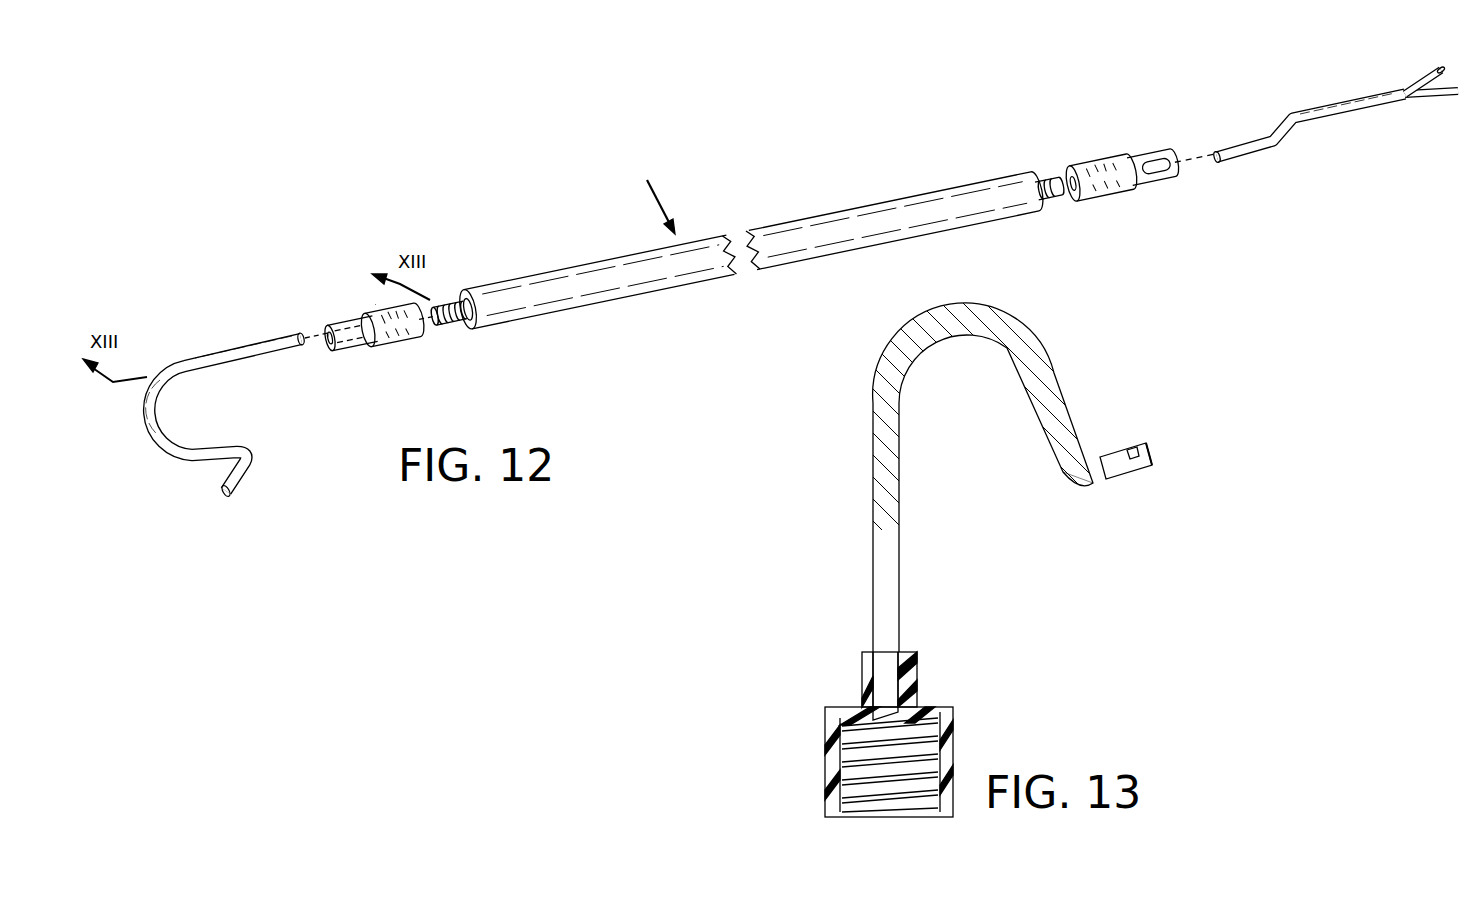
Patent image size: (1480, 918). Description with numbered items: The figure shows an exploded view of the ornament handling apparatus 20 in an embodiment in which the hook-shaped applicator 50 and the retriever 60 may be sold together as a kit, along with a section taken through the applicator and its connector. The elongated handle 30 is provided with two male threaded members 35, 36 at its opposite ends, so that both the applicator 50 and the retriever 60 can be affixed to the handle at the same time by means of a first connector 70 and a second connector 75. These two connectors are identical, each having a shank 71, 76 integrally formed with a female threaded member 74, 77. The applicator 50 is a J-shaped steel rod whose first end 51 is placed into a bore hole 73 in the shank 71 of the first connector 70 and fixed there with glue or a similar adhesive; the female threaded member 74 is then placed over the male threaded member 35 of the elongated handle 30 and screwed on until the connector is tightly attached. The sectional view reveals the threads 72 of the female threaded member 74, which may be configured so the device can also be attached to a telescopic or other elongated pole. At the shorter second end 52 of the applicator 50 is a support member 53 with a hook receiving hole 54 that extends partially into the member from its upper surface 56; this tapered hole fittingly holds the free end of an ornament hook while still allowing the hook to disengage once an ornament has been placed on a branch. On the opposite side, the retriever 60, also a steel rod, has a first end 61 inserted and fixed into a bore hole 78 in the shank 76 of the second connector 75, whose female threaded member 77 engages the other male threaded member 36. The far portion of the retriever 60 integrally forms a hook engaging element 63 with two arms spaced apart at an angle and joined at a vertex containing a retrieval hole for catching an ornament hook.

In FIG. 12, the ornament handling apparatus 20 is at (646, 201).
In FIG. 12, the elongated handle 30 is at (751, 250).
In FIG. 12, the male threaded member 35 is at (448, 313).
In FIG. 12, the male threaded member 36 is at (1050, 188).
In FIG. 12, the hook-shaped applicator 50 is at (160, 435).
In FIG. 13, the hook-shaped applicator 50 is at (883, 422).
In FIG. 12, the first end of applicator 51 is at (299, 332).
In FIG. 13, the first end of applicator 51 is at (883, 697).
In FIG. 13, the second end of applicator 52 is at (1073, 472).
In FIG. 12, the support member 53 is at (210, 473).
In FIG. 13, the support member 53 is at (1117, 470).
In FIG. 13, the hook receiving hole 54 is at (1130, 442).
In FIG. 13, the upper surface of support member 56 is at (1110, 453).
In FIG. 12, the retriever 60 is at (1310, 122).
In FIG. 12, the first end of retriever 61 is at (1217, 152).
In FIG. 12, the hook engaging element 63 is at (1403, 85).
In FIG. 12, the first connector 70 is at (379, 328).
In FIG. 12, the shank 71 is at (347, 335).
In FIG. 13, the shank 71 is at (912, 673).
In FIG. 13, the threads 72 is at (917, 777).
In FIG. 12, the bore hole 73 is at (327, 340).
In FIG. 12, the female threaded member 74 is at (377, 302).
In FIG. 13, the female threaded member 74 is at (828, 773).
In FIG. 12, the second connector 75 is at (1102, 178).
In FIG. 12, the shank 76 is at (1171, 163).
In FIG. 12, the female threaded member 77 is at (1073, 183).
In FIG. 12, the bore hole 78 is at (1156, 165).